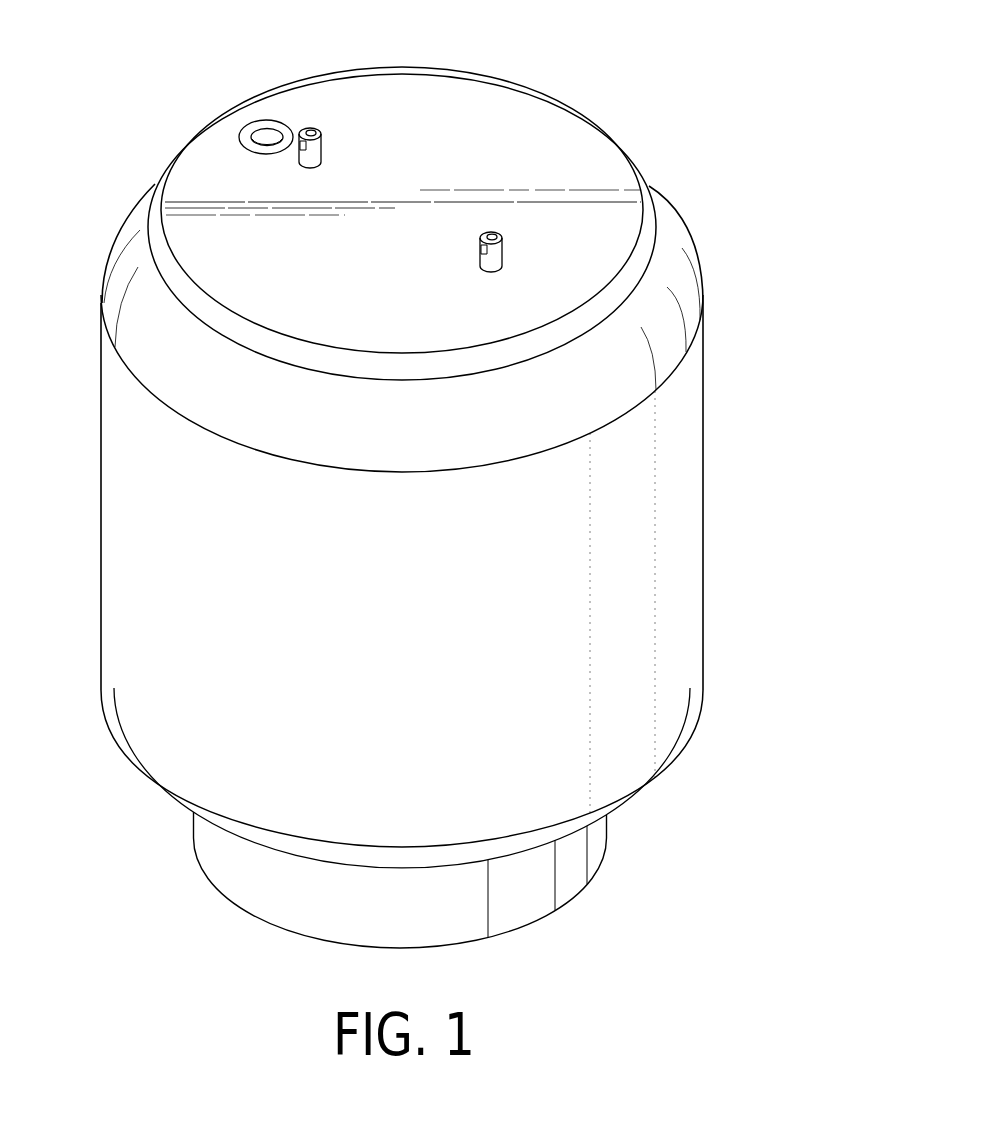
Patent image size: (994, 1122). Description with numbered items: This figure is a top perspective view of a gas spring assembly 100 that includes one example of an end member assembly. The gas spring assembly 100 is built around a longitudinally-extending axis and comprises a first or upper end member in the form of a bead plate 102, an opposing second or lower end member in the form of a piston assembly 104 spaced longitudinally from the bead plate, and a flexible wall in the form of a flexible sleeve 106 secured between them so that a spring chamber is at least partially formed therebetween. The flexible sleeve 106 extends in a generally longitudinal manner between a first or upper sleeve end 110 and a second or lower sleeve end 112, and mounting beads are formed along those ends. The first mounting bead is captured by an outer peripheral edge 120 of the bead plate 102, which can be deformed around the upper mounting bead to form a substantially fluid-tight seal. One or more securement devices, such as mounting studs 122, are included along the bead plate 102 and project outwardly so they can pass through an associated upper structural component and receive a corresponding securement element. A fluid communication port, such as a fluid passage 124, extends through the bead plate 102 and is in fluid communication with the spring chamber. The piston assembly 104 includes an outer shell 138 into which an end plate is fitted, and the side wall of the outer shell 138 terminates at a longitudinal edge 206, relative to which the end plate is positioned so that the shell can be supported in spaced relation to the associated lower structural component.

The gas spring assembly 100 is at (712, 138).
The bead plate 102 is at (480, 92).
The piston assembly 104 is at (645, 838).
The flexible sleeve 106 is at (688, 553).
The first sleeve end 110 is at (712, 215).
The second sleeve end 112 is at (720, 748).
The outer peripheral edge 120 is at (160, 180).
The mounting studs 122 is at (350, 138).
The fluid passage 124 is at (263, 110).
The outer shell 138 is at (533, 880).
The longitudinal edge 206 is at (255, 915).